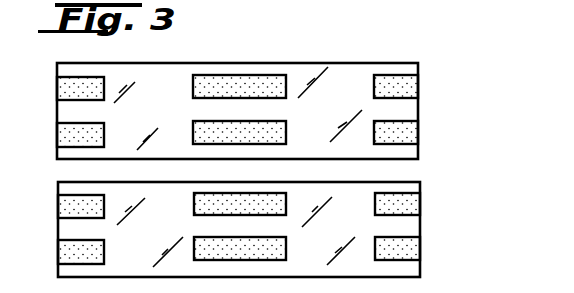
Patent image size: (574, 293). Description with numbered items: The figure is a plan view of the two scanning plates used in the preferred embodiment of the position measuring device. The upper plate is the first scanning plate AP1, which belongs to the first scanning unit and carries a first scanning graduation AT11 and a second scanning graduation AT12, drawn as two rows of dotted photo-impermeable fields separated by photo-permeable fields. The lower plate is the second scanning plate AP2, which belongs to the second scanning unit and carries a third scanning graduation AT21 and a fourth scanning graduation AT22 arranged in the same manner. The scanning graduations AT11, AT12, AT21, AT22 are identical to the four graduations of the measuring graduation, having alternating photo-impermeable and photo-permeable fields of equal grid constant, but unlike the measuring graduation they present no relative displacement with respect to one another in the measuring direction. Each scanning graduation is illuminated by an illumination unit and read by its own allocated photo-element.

The first scanning plate AP1 is at (412, 109).
The first scanning graduation AT11 is at (415, 79).
The second scanning graduation AT12 is at (415, 138).
The second scanning plate AP2 is at (412, 229).
The third scanning graduation AT21 is at (415, 199).
The fourth scanning graduation AT22 is at (415, 258).